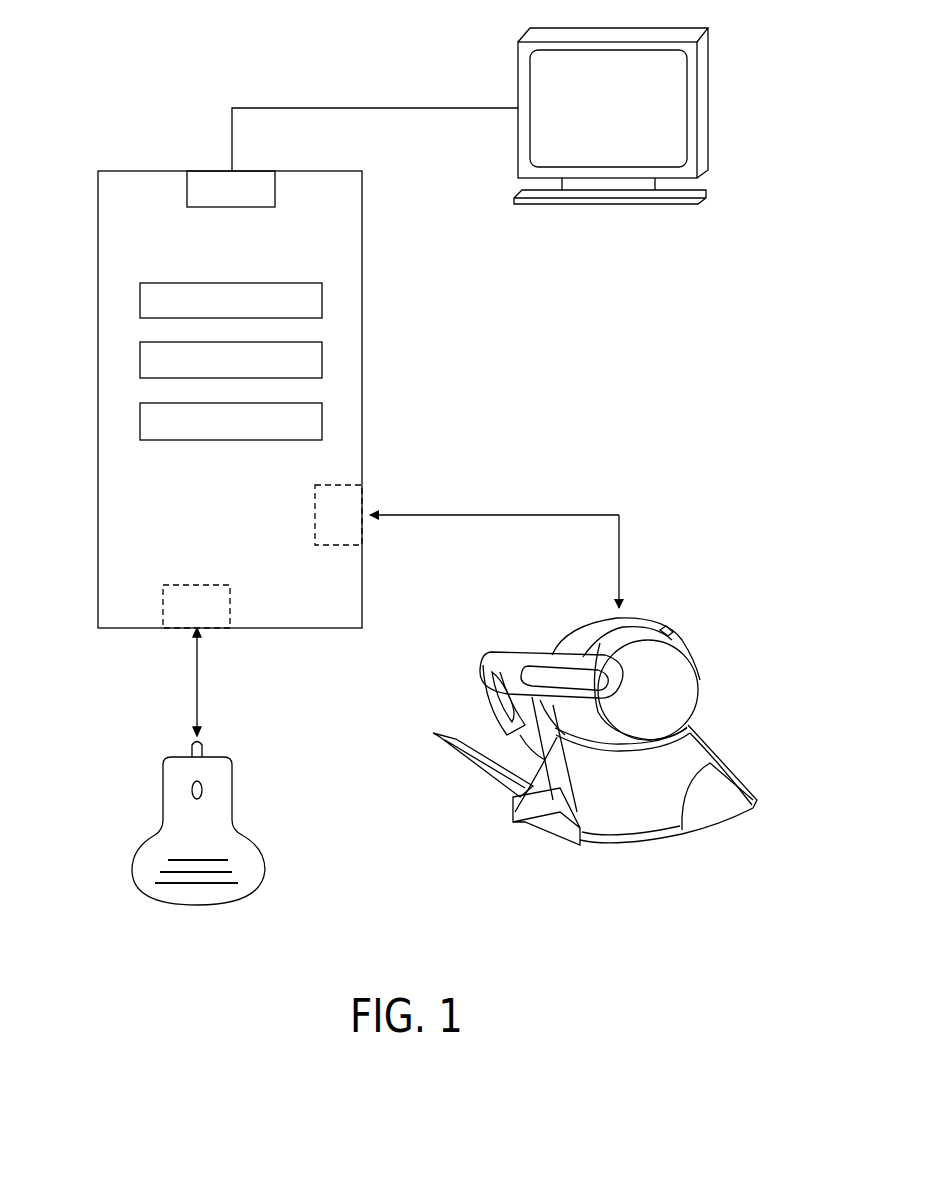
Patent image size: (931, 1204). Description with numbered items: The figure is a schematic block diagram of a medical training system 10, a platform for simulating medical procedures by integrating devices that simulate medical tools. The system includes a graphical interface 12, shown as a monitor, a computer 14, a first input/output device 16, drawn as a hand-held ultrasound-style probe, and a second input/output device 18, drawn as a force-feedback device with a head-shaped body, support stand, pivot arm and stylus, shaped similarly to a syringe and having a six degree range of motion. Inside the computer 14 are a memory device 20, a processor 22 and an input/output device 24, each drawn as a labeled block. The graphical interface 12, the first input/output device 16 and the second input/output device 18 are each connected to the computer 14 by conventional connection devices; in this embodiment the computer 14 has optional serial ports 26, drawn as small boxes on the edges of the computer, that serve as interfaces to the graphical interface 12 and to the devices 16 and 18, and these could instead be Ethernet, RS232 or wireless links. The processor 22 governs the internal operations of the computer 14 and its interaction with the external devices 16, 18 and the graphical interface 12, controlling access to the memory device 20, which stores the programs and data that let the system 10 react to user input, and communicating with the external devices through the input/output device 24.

The medical training system 10 is at (96, 962).
The graphical interface 12 is at (705, 98).
The computer 14 is at (108, 423).
The first input/output device 16 is at (232, 760).
The second input/output device 18 is at (700, 688).
The memory device 20 is at (322, 300).
The processor 22 is at (322, 358).
The input/output device 24 is at (322, 420).
The serial ports 26 is at (200, 188).